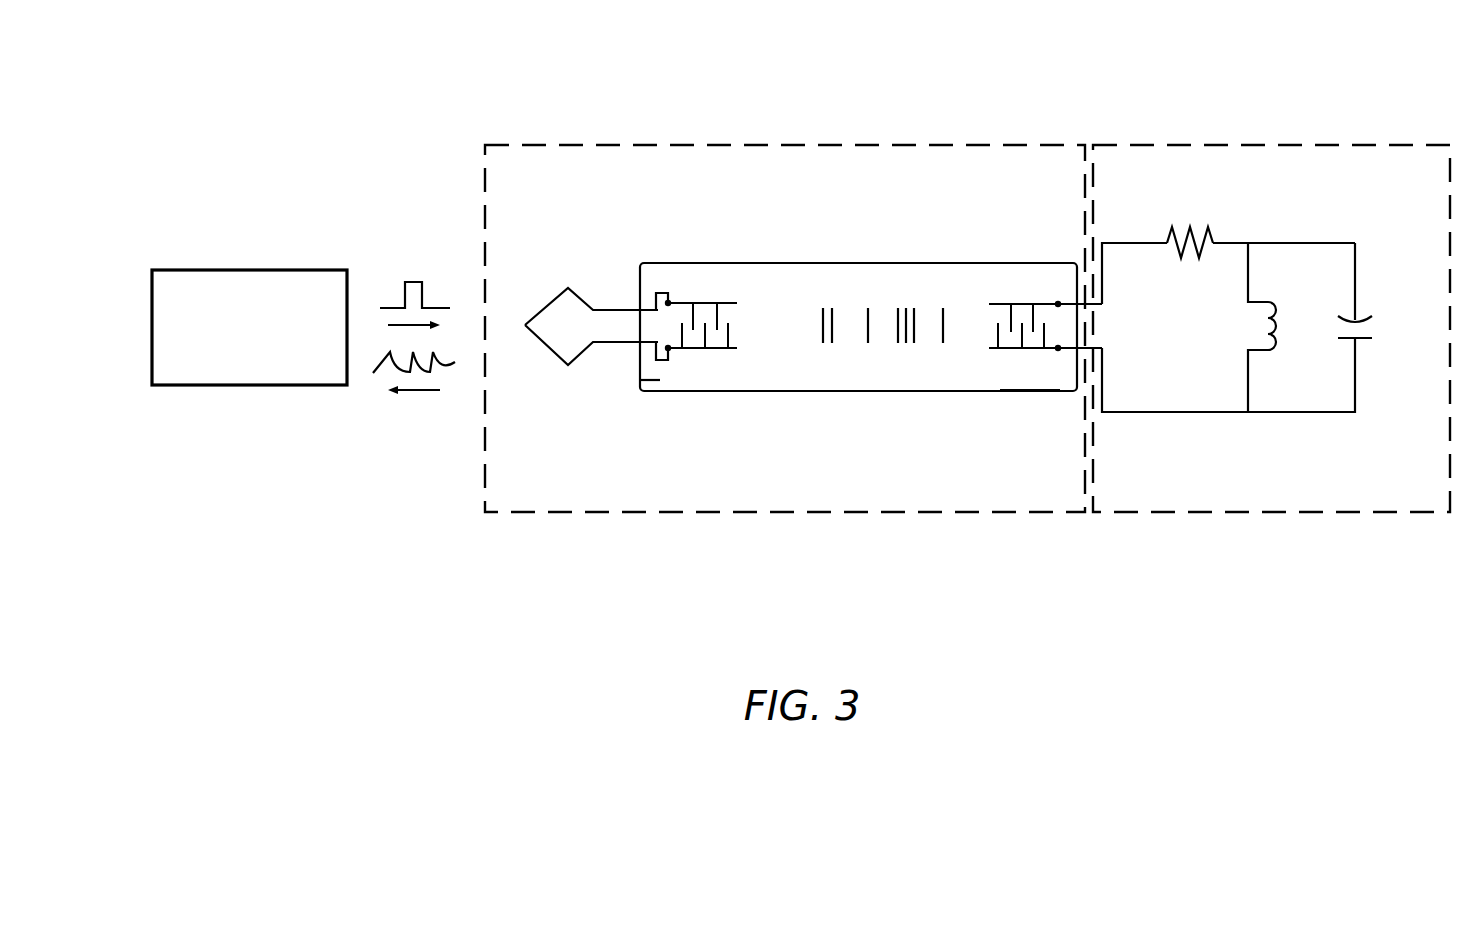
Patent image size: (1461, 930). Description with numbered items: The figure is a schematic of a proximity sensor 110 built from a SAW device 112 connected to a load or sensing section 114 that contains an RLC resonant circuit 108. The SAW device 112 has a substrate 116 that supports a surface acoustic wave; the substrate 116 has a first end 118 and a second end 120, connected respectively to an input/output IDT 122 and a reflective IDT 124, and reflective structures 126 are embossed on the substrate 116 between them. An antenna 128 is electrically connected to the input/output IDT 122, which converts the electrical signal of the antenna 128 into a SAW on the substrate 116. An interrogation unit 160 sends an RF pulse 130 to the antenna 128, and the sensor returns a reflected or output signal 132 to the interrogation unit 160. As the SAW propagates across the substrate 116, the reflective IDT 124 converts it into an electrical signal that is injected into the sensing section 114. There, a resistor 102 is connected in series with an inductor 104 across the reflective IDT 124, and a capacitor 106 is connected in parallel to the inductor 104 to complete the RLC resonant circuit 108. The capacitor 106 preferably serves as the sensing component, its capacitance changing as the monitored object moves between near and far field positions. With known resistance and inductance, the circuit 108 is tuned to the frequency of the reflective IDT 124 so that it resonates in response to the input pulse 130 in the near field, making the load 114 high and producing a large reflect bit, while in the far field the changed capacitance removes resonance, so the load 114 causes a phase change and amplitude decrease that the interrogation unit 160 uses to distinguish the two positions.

The resistor 102 is at (1198, 232).
The inductor 104 is at (1280, 310).
The capacitor 106 is at (1367, 340).
The RLC resonant circuit 108 is at (1297, 436).
The proximity sensor 110 is at (984, 96).
The SAW device 112 is at (608, 144).
The sensing section 114 is at (1288, 145).
The substrate 116 is at (930, 280).
The first end 118 is at (660, 378).
The second end 120 is at (1015, 378).
The input/output IDT 122 is at (700, 303).
The reflective IDT 124 is at (1020, 300).
The reflective structures 126 is at (845, 323).
The antenna 128 is at (538, 312).
The RF pulse 130 is at (423, 290).
The output signal 132 is at (385, 362).
The interrogation unit 160 is at (283, 375).